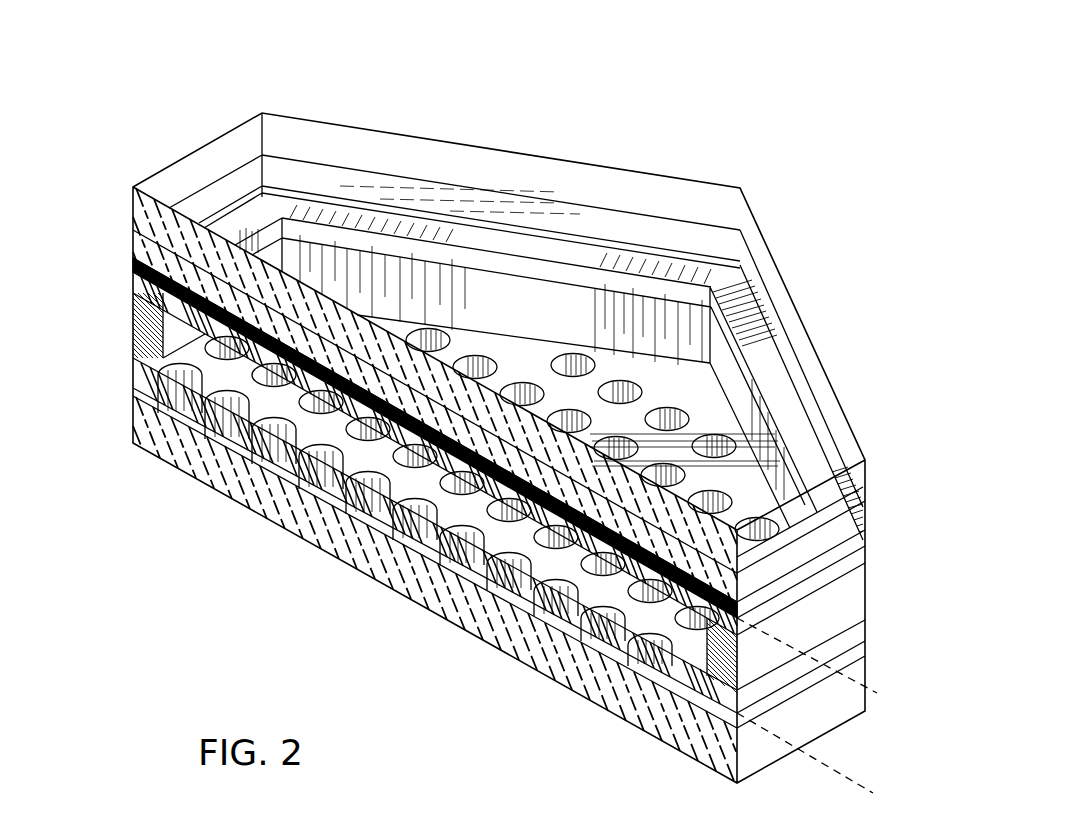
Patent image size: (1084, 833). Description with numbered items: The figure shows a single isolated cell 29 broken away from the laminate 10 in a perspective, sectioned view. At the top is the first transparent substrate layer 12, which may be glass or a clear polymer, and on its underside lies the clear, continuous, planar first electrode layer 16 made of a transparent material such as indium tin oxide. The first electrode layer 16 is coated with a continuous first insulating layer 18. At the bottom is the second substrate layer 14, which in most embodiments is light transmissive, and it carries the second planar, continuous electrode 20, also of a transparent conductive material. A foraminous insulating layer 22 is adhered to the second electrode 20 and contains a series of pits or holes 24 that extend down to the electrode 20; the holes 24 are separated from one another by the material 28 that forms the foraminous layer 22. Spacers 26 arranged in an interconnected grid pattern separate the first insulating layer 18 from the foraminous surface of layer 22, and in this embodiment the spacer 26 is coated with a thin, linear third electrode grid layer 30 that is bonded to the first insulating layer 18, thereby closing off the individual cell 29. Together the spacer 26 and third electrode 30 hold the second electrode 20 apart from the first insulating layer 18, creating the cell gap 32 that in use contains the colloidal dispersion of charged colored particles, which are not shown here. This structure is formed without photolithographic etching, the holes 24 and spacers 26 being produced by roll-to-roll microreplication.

The laminate 10 is at (693, 140).
The first transparent substrate layer 12 is at (133, 213).
The second substrate layer 14 is at (133, 424).
The first electrode layer 16 is at (133, 242).
The first insulating layer 18 is at (133, 265).
The second electrode 20 is at (133, 386).
The foraminous insulating layer 22 is at (696, 396).
The holes 24 is at (483, 513).
The spacers 26 is at (133, 332).
The material 28 is at (185, 450).
The cells 29 is at (600, 168).
The third electrode grid layer 30 is at (133, 286).
The cell gap 32 is at (880, 698).